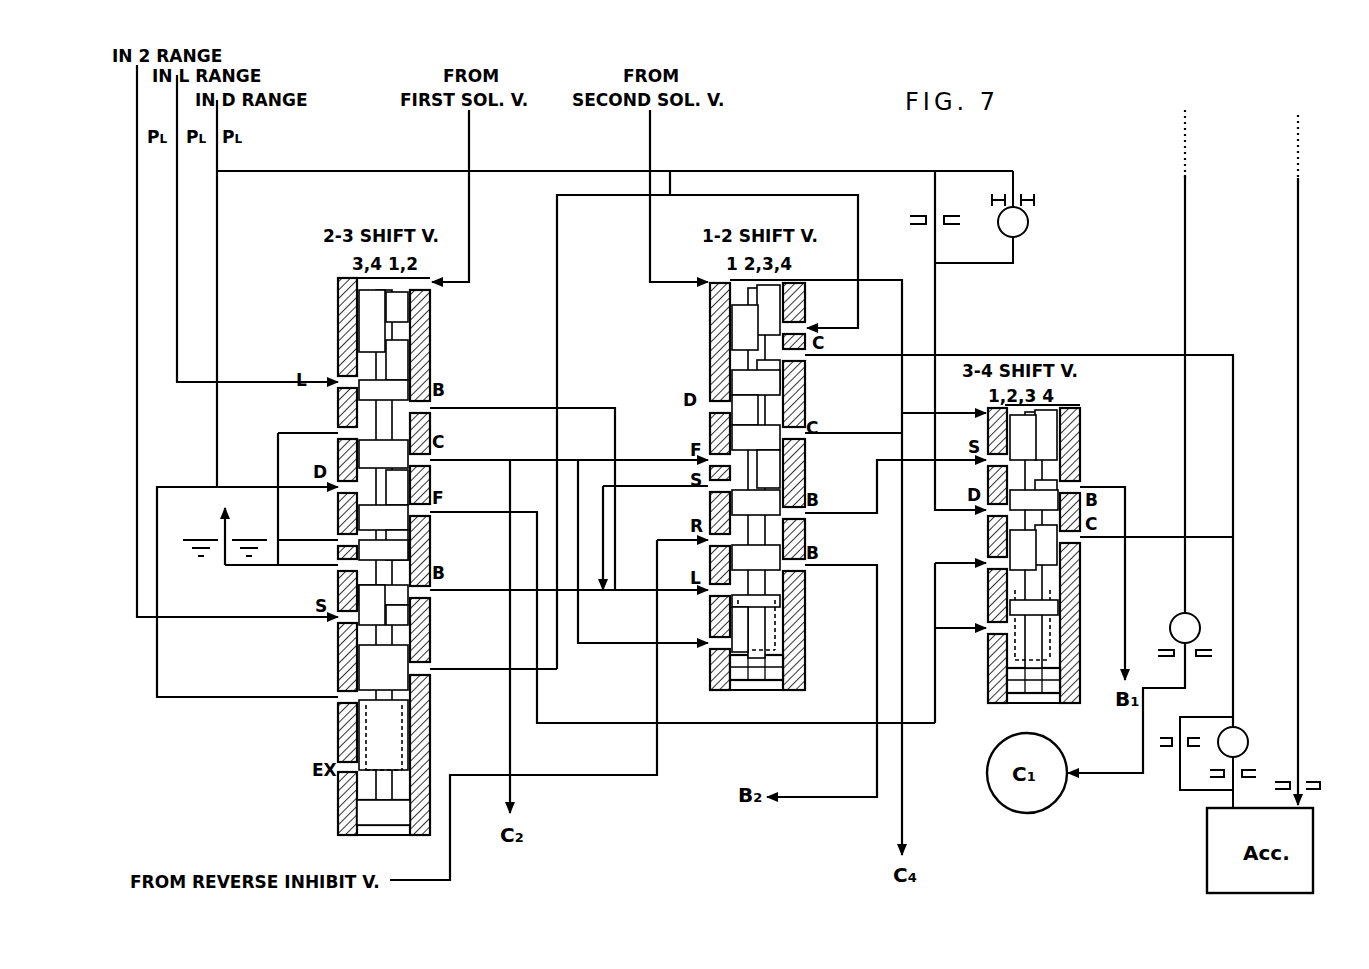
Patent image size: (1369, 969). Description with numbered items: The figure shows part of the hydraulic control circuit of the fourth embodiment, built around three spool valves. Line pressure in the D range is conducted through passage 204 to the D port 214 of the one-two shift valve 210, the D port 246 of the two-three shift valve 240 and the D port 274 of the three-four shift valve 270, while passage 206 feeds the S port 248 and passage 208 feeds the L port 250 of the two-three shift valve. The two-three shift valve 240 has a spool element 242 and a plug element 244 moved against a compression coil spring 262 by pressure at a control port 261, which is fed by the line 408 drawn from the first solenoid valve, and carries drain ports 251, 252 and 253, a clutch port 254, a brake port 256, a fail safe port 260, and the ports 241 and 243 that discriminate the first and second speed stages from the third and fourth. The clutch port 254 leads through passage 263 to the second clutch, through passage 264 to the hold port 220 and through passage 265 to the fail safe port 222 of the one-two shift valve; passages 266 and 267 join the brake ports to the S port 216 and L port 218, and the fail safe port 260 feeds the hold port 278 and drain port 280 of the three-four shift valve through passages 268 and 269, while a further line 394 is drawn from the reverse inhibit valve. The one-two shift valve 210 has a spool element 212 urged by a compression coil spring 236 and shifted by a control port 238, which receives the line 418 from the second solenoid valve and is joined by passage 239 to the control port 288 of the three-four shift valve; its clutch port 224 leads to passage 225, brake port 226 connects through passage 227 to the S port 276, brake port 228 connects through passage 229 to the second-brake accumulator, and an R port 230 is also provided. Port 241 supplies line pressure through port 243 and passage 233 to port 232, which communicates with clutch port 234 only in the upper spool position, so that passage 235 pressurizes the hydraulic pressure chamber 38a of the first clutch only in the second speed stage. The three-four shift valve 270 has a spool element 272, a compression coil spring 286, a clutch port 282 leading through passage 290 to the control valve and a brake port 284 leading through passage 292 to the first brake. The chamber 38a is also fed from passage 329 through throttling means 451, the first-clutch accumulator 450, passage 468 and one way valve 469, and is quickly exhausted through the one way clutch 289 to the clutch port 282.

The passage 204 is at (218, 156).
The passage 206 is at (137, 235).
The passage 208 is at (188, 232).
The 1-2 shift valve 210 is at (761, 470).
The spool element 212 is at (790, 394).
The D port 214 is at (704, 394).
The S port 216 is at (712, 490).
The L port 218 is at (716, 600).
The hold port 220 is at (714, 654).
The fail safe port 222 is at (702, 454).
The clutch port 224 is at (804, 444).
The passage 225 is at (903, 782).
The brake port 226 is at (804, 518).
The passage 227 is at (842, 516).
The brake port 228 is at (804, 566).
The passage 229 is at (814, 798).
The R port 230 is at (714, 546).
The port 232 is at (804, 320).
The passage 233 is at (557, 245).
The clutch port 234 is at (802, 358).
The passage 235 is at (1082, 354).
The compression coil spring 236 is at (778, 648).
The control port 238 is at (732, 276).
The passage 239 is at (886, 403).
The 2-3 shift valve 240 is at (363, 556).
The port 241 is at (338, 698).
The spool element 242 is at (421, 552).
The port 243 is at (429, 676).
The plug element 244 is at (410, 344).
The D port 246 is at (354, 484).
The S port 248 is at (348, 631).
The L port 250 is at (345, 366).
The drain port 251 is at (354, 566).
The drain port 252 is at (340, 432).
The drain port 253 is at (352, 538).
The clutch port 254 is at (429, 462).
The brake port 256 is at (428, 598).
The fail safe port 260 is at (431, 514).
The control port 261 is at (422, 300).
The compression coil spring 262 is at (348, 792).
The passage 263 is at (512, 757).
The passage 264 is at (613, 646).
The passage 265 is at (682, 460).
The passage 266 is at (598, 590).
The passage 267 is at (578, 398).
The passage 268 is at (782, 726).
The passage 269 is at (958, 561).
The 3-4 shift valve 270 is at (1080, 702).
The spool element 272 is at (1043, 542).
The D port 274 is at (996, 512).
The S port 276 is at (999, 462).
The hold port 278 is at (996, 634).
The drain port 280 is at (996, 564).
The clutch port 282 is at (1070, 540).
The brake port 284 is at (1075, 474).
The compression coil spring 286 is at (1054, 640).
The control port 288 is at (997, 405).
The one way clutch 289 is at (1172, 614).
The passage 290 is at (1187, 240).
The passage 292 is at (1178, 628).
The passage 329 is at (1298, 252).
The hydraulic pressure chamber 38a is at (1020, 812).
The oil line 394 is at (598, 780).
The oil line from first solenoid valve 408 is at (469, 146).
The oil line from second solenoid valve 418 is at (650, 146).
The C1 accumulator 450 is at (1299, 848).
The throttling means 451 is at (1308, 780).
The passage 468 is at (1229, 802).
The one way valve 469 is at (1237, 734).